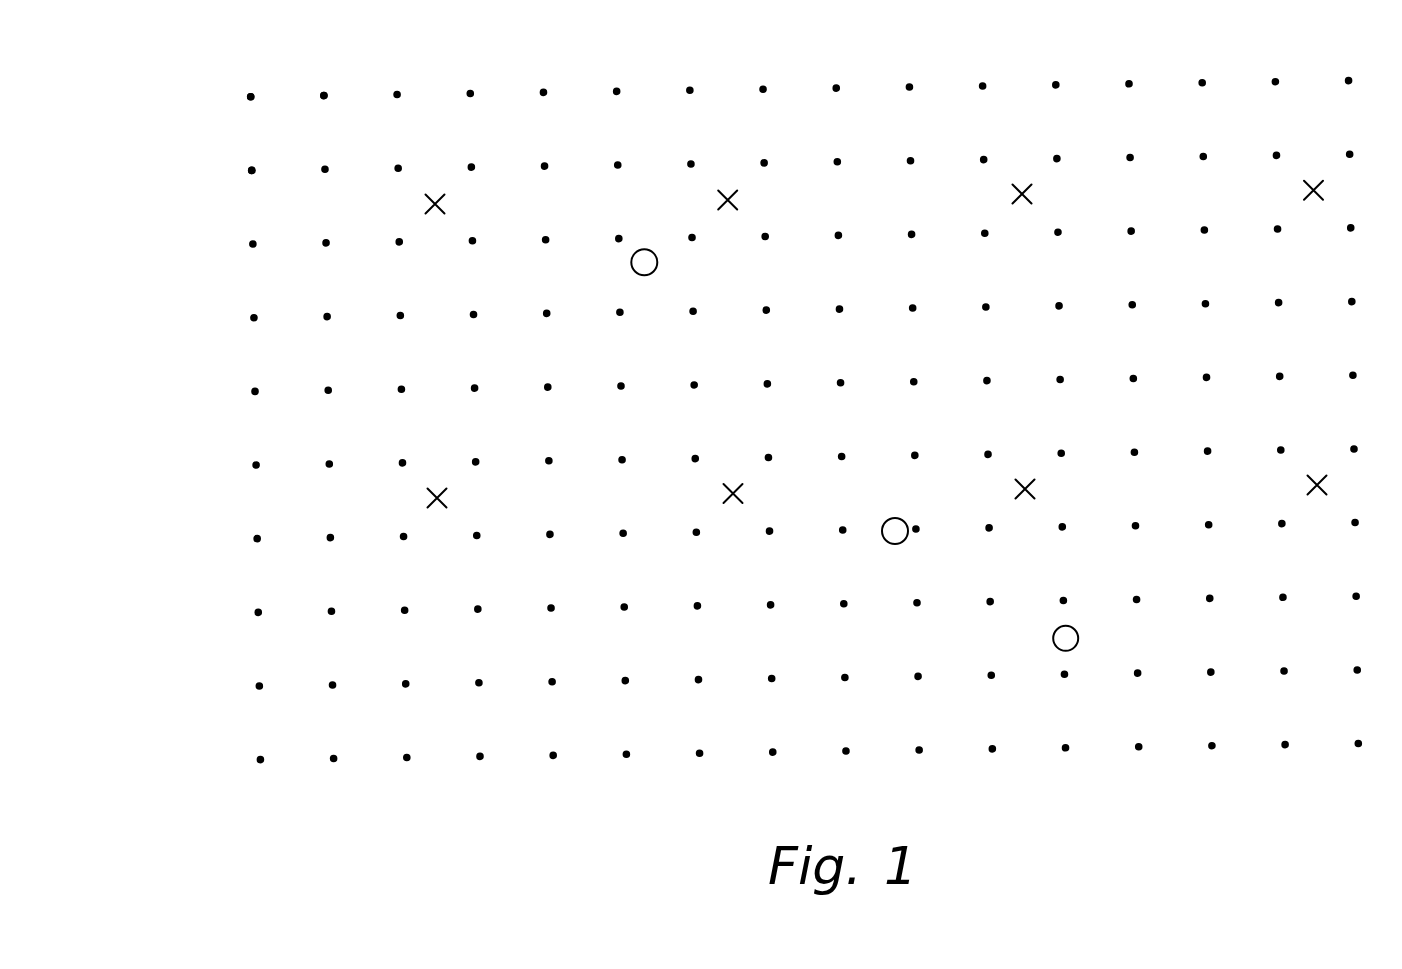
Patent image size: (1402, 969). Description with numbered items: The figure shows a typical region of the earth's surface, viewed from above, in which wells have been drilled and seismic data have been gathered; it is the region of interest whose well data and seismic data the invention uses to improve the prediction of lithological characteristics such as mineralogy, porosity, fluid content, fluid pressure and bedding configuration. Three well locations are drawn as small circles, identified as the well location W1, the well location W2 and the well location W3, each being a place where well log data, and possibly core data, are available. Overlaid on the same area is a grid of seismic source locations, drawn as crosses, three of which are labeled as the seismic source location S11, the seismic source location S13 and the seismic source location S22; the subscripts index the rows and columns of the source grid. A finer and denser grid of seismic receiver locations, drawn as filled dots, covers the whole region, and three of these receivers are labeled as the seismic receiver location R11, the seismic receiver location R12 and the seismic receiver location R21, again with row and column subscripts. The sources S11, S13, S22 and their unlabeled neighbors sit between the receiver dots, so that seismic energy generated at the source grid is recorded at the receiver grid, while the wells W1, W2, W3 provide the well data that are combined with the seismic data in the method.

The seismic receiver location R11 is at (248, 95).
The seismic receiver location R12 is at (323, 92).
The seismic receiver location R21 is at (248, 168).
The seismic source location S11 is at (429, 204).
The seismic source location S13 is at (1018, 193).
The seismic source location S22 is at (728, 493).
The well location W1 is at (645, 249).
The well location W2 is at (897, 518).
The well location W3 is at (1053, 638).